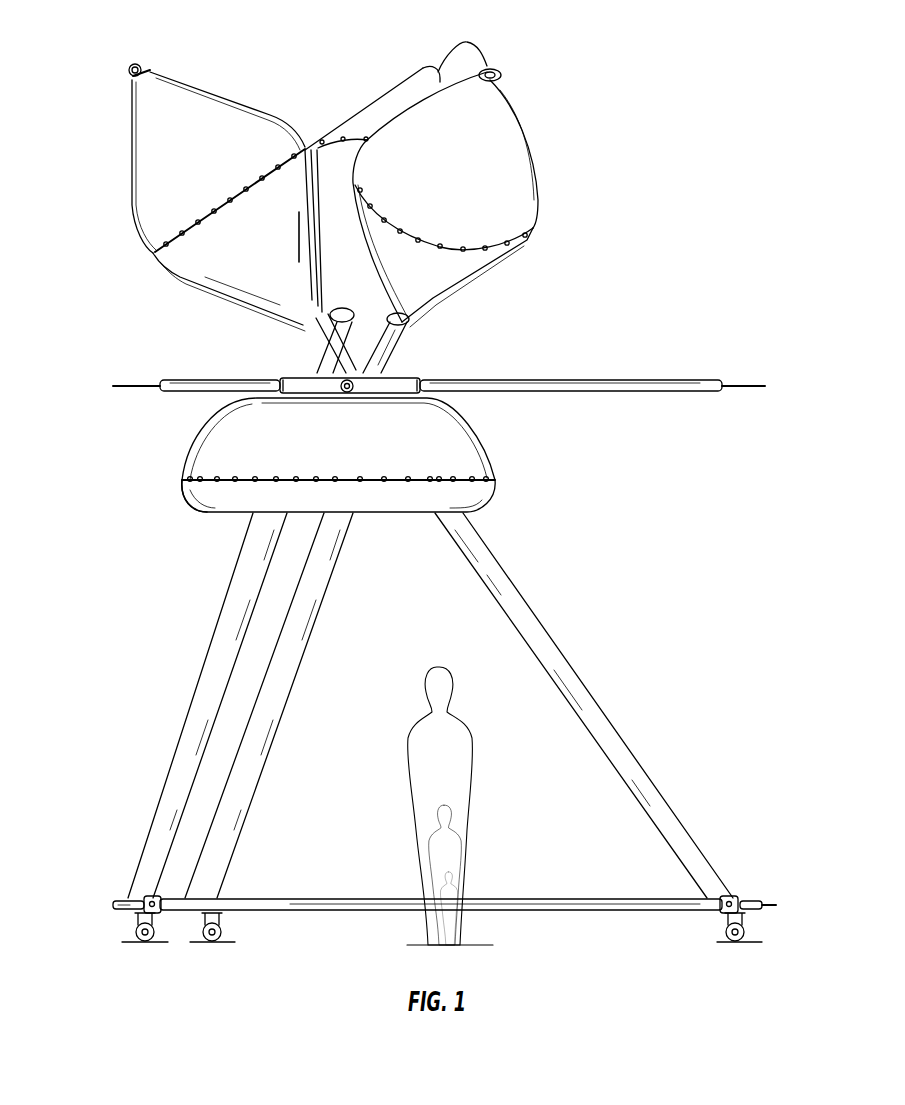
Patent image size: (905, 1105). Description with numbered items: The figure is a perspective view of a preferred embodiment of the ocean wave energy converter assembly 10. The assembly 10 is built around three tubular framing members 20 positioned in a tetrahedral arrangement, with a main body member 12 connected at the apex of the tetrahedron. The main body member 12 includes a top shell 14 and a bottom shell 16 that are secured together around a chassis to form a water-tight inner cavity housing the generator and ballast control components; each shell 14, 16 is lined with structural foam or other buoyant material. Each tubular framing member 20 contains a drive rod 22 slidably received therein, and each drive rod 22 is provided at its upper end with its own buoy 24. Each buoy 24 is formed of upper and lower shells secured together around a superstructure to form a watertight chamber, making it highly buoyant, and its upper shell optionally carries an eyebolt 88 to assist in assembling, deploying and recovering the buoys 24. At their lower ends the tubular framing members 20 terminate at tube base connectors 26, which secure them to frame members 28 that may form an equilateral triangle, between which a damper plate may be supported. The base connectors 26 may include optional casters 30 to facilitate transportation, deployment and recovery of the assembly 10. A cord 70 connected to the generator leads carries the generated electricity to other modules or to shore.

The ocean wave energy converter assembly 10 is at (648, 240).
The main body member 12 is at (308, 472).
The top shell 14 is at (182, 462).
The bottom shell 16 is at (192, 508).
The tubular framing members 20 is at (197, 681).
The drive rod 22 is at (322, 356).
The buoy 24 is at (124, 205).
The tube base connectors 26 is at (441, 949).
The frame members 28 is at (520, 886).
The casters 30 is at (163, 925).
The cord 70 is at (735, 384).
The eyebolt 88 is at (130, 65).